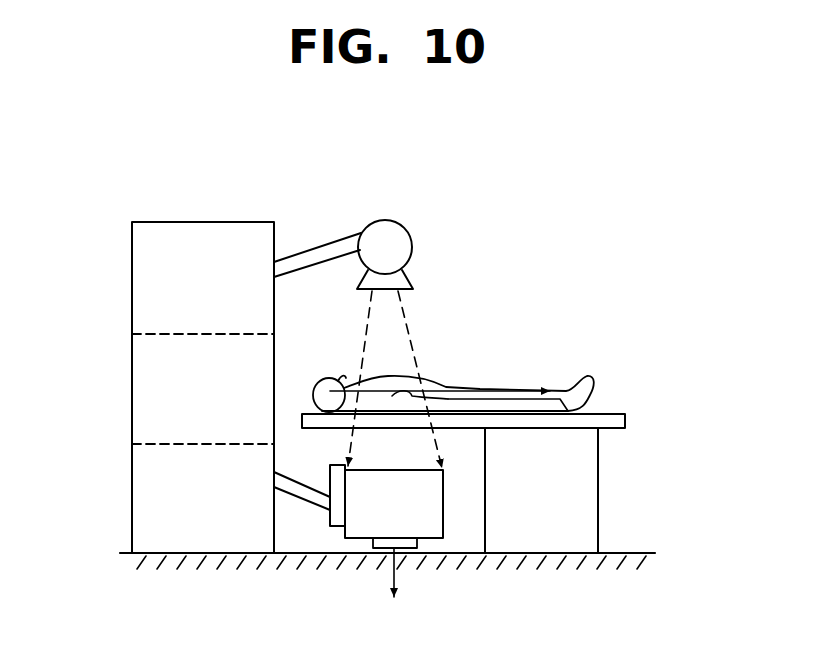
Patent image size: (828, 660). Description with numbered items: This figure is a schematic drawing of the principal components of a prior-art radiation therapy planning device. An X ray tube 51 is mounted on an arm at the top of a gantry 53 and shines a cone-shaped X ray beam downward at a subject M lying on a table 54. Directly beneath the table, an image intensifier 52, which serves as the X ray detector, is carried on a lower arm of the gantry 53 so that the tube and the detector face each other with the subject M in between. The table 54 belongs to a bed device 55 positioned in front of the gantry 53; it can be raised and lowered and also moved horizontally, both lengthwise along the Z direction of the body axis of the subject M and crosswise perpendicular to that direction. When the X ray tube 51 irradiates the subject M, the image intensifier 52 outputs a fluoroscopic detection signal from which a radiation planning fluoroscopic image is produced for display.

The X ray tube 51 is at (378, 222).
The image intensifier (I—I tube) 52 is at (428, 527).
The gantry 53 is at (148, 392).
The table 54 is at (617, 428).
The bed device 55 is at (600, 527).
The subject M is at (441, 386).
The Z direction Z is at (440, 381).